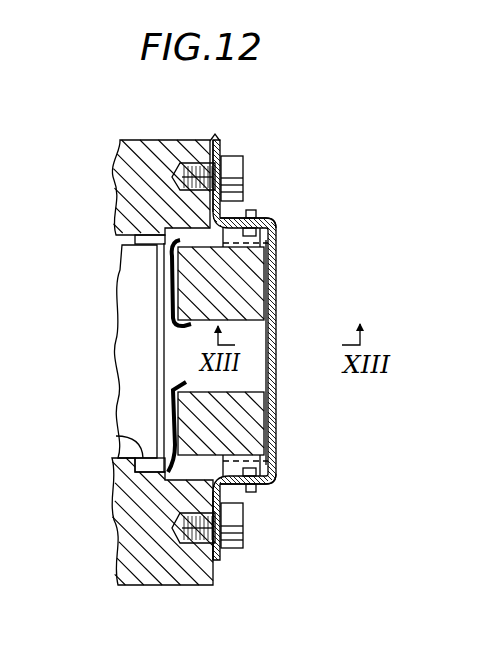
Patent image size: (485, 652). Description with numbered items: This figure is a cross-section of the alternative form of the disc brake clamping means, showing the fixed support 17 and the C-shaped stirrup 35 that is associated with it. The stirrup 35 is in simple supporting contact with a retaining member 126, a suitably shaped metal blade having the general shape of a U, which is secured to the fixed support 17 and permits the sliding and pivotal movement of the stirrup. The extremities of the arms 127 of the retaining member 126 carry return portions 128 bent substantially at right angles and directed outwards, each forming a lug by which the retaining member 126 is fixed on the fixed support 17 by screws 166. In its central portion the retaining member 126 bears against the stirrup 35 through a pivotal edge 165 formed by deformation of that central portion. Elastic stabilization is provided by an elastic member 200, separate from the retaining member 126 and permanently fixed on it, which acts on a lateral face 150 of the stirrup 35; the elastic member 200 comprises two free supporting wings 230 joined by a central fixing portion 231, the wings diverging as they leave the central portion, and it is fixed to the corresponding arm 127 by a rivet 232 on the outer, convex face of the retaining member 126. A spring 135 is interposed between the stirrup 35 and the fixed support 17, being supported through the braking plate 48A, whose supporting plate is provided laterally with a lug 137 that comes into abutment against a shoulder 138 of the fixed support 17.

The fixed support 17 is at (133, 134).
The stirrup 35 is at (252, 423).
The braking plate 48A is at (132, 344).
The retaining member 126 is at (279, 387).
The arm of the retaining member 127 is at (265, 221).
The return portion 128 is at (219, 145).
The spring 135 is at (162, 255).
The lug 137 is at (124, 228).
The shoulder 138 is at (116, 436).
The lateral face of the stirrup 150 is at (218, 252).
The pivotal edge 165 is at (262, 338).
The screw 166 is at (240, 168).
The elastic member 200 is at (215, 235).
The free supporting wing 230 is at (268, 261).
The central fixing portion 231 is at (274, 228).
The rivet 232 is at (256, 209).